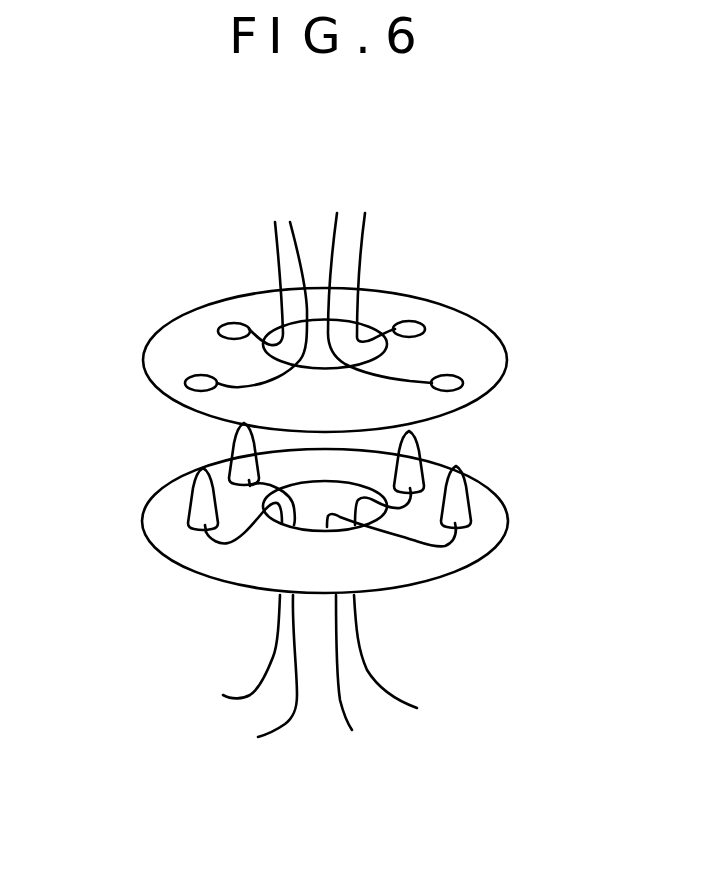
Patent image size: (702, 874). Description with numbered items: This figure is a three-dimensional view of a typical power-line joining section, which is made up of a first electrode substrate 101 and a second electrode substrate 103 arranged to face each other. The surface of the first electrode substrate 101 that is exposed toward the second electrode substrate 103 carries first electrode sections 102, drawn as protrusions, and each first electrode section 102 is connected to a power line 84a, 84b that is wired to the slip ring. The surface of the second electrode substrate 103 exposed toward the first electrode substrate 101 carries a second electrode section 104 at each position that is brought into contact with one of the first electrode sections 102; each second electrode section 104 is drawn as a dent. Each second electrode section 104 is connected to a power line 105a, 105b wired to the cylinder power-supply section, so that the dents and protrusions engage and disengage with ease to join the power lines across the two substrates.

The first electrode substrate 101 is at (475, 565).
The first electrode sections 102 is at (197, 510).
The second electrode substrate 103 is at (496, 330).
The second electrode section 104 is at (184, 383).
The power line 105a is at (277, 248).
The power line 105b is at (365, 250).
The power line 84a is at (262, 681).
The power line 84b is at (397, 695).